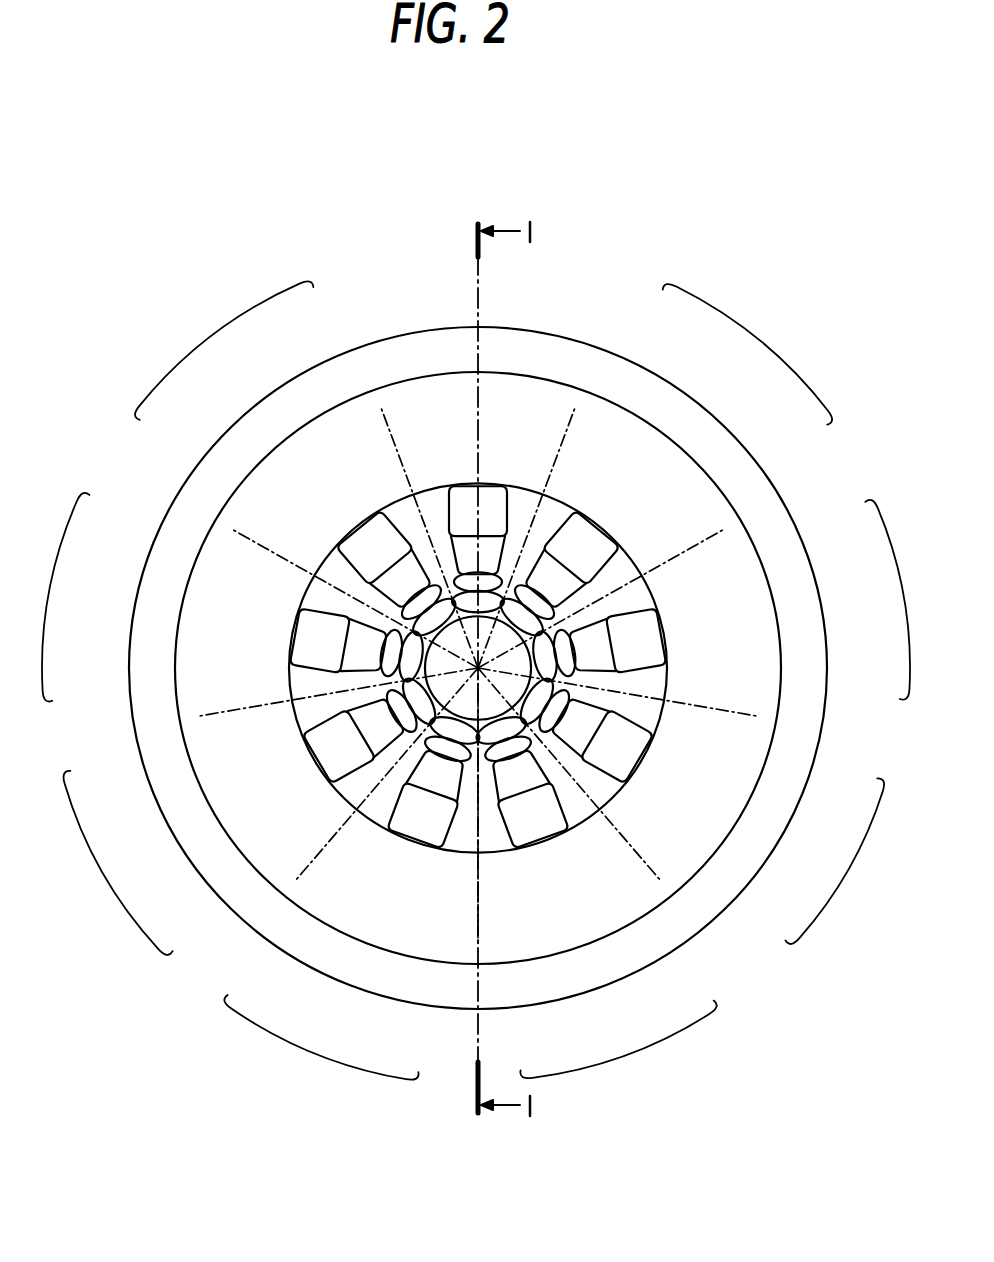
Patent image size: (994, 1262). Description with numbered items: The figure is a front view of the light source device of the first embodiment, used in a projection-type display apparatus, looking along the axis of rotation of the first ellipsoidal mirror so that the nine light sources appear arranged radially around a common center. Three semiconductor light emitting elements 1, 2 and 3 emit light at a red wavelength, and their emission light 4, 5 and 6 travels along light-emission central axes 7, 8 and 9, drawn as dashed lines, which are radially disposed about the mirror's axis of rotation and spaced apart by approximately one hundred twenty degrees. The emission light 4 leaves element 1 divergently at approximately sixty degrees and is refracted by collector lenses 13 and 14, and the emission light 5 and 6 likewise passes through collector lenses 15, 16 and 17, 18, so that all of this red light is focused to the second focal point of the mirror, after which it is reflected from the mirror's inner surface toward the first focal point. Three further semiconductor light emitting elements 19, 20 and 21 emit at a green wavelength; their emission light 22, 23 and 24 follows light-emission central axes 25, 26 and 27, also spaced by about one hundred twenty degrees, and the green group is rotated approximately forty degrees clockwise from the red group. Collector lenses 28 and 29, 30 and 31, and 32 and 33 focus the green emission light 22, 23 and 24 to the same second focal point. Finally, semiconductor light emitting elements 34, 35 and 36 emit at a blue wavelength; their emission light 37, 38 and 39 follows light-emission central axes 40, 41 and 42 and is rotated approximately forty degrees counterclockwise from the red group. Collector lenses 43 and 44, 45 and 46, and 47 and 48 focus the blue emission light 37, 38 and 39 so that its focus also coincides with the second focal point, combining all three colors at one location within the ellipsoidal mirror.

The semiconductor light emitting element 1 is at (503, 488).
The semiconductor light emitting element 2 is at (645, 765).
The semiconductor light emitting element 3 is at (323, 753).
The emission light 4 is at (453, 493).
The emission light 5 is at (623, 770).
The emission light 6 is at (353, 713).
The light-emission central axis 7 is at (478, 946).
The light-emission central axis 8 is at (231, 529).
The light-emission central axis 9 is at (725, 529).
The collector lens 13 is at (508, 580).
The collector lens 14 is at (506, 600).
The collector lens 15 is at (640, 740).
The collector lens 16 is at (630, 755).
The collector lens 17 is at (420, 770).
The collector lens 18 is at (400, 790).
The semiconductor light emitting element 19 is at (585, 535).
The semiconductor light emitting element 20 is at (540, 833).
The semiconductor light emitting element 21 is at (303, 637).
The emission light 22 is at (612, 552).
The emission light 23 is at (525, 838).
The emission light 24 is at (300, 615).
The light-emission central axis 25 is at (295, 881).
The light-emission central axis 26 is at (381, 406).
The light-emission central axis 27 is at (759, 714).
The collector lens 28 is at (565, 540).
The collector lens 29 is at (530, 543).
The collector lens 30 is at (563, 843).
The collector lens 31 is at (567, 832).
The collector lens 32 is at (323, 680).
The collector lens 33 is at (323, 703).
The semiconductor light emitting element 34 is at (340, 553).
The semiconductor light emitting element 35 is at (415, 830).
The semiconductor light emitting element 36 is at (653, 635).
The emission light 37 is at (323, 557).
The emission light 38 is at (375, 820).
The emission light 39 is at (610, 645).
The light-emission central axis 40 is at (661, 881).
The light-emission central axis 41 is at (575, 406).
The light-emission central axis 42 is at (197, 714).
The collector lens 43 is at (327, 553).
The collector lens 44 is at (360, 540).
The collector lens 45 is at (428, 835).
The collector lens 46 is at (445, 830).
The collector lens 47 is at (590, 598).
The collector lens 48 is at (590, 607).